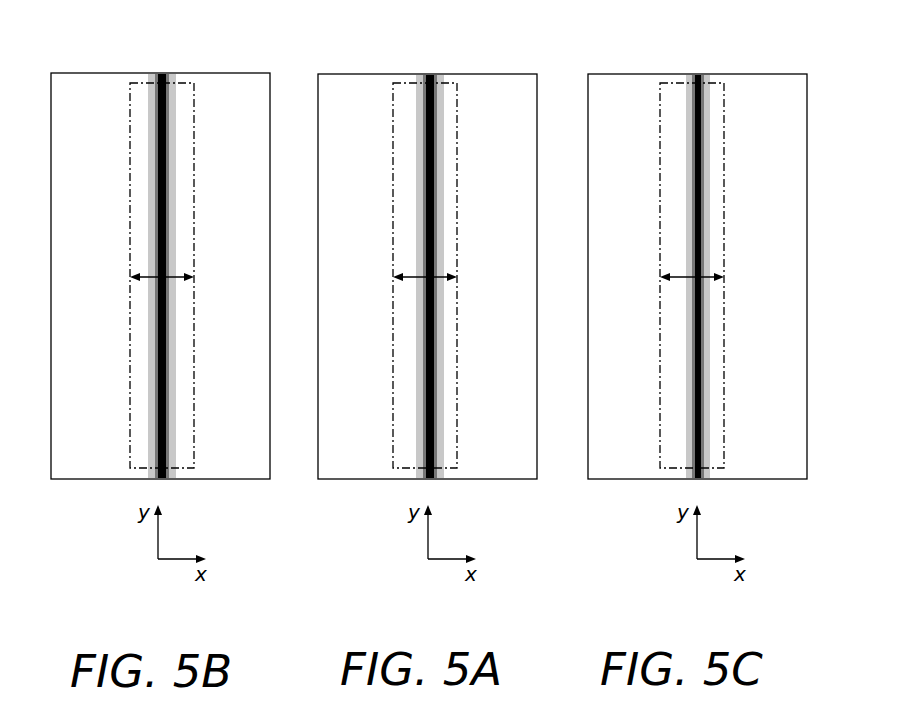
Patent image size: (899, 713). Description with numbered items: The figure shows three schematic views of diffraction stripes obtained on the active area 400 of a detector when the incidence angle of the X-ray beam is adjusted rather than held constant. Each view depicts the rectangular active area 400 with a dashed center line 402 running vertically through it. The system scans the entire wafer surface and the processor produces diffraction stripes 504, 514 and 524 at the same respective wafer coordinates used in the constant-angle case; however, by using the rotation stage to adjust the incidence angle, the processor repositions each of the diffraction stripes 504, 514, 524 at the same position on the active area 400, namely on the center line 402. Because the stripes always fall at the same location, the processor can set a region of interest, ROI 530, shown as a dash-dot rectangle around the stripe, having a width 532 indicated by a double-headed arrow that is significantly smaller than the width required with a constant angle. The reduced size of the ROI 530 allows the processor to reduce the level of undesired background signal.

In FIG. 5B, the active area 400 is at (71, 480).
In FIG. 5A, the active area 400 is at (522, 480).
In FIG. 5C, the active area 400 is at (600, 480).
In FIG. 5B, the center line 402 is at (162, 125).
In FIG. 5A, the center line 402 is at (430, 110).
In FIG. 5C, the center line 402 is at (698, 112).
In FIG. 5A, the diffraction stripe 504 is at (430, 155).
In FIG. 5B, the diffraction stripe 514 is at (152, 150).
In FIG. 5C, the diffraction stripe 524 is at (703, 152).
In FIG. 5B, the ROI 530 is at (194, 403).
In FIG. 5A, the ROI 530 is at (393, 408).
In FIG. 5C, the ROI 530 is at (725, 160).
In FIG. 5B, the width 532 is at (147, 275).
In FIG. 5A, the width 532 is at (415, 280).
In FIG. 5C, the width 532 is at (710, 280).